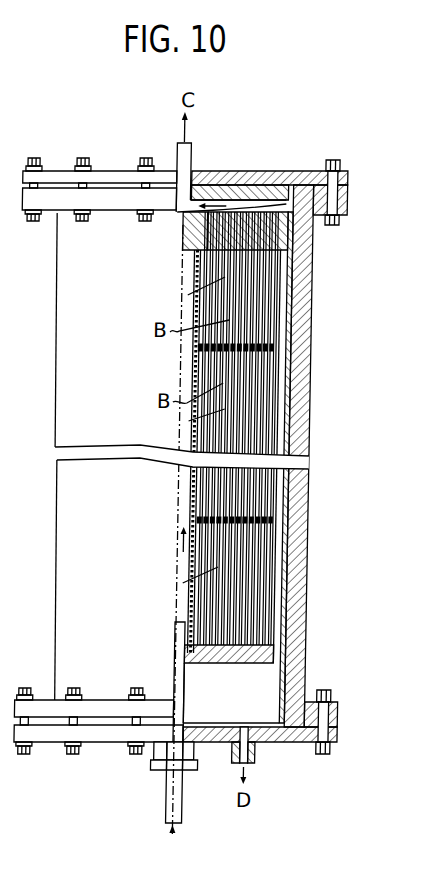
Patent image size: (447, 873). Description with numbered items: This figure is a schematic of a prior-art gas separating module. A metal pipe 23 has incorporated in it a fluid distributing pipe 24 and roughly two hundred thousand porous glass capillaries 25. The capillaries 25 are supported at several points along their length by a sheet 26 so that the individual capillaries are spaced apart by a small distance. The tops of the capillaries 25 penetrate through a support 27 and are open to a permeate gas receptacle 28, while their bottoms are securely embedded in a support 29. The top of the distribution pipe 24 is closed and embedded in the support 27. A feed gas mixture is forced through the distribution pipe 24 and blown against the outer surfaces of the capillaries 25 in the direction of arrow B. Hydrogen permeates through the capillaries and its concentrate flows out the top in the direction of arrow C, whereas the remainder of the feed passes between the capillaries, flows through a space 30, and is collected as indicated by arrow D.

The metal pipe 23 is at (300, 554).
The fluid distributing pipe 24 is at (193, 493).
The porous glass capillaries 25 is at (283, 377).
The sheet 26 is at (274, 521).
The support 27 is at (183, 231).
The permeate gas receptacle 28 is at (236, 188).
The support 29 is at (210, 663).
The space 30 is at (269, 687).